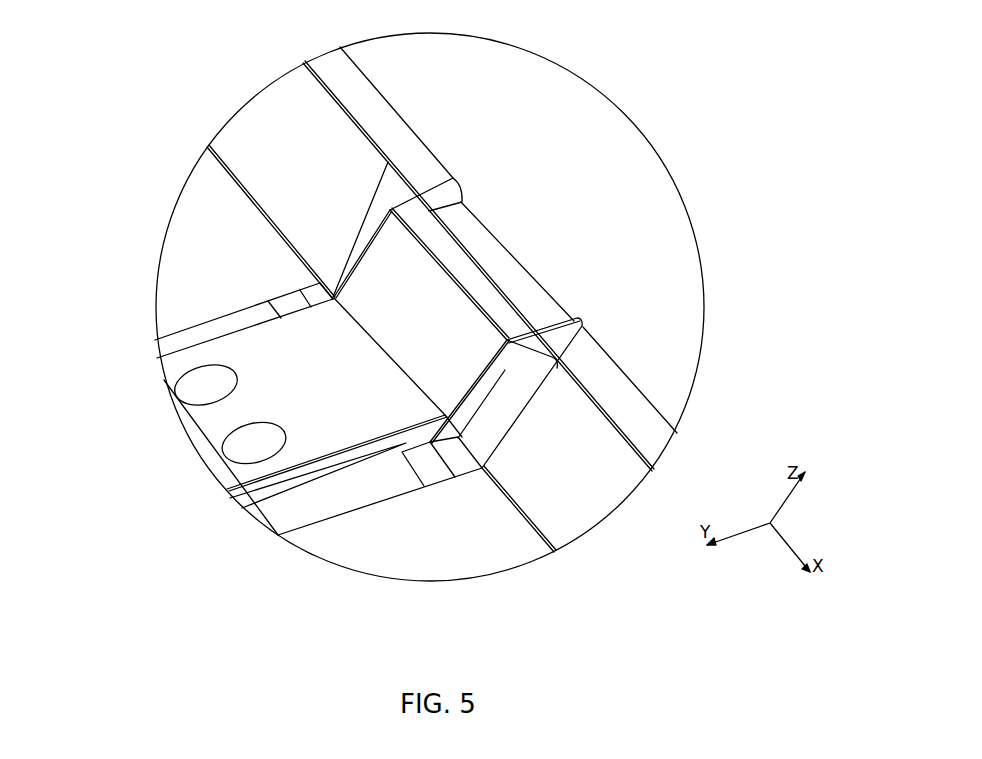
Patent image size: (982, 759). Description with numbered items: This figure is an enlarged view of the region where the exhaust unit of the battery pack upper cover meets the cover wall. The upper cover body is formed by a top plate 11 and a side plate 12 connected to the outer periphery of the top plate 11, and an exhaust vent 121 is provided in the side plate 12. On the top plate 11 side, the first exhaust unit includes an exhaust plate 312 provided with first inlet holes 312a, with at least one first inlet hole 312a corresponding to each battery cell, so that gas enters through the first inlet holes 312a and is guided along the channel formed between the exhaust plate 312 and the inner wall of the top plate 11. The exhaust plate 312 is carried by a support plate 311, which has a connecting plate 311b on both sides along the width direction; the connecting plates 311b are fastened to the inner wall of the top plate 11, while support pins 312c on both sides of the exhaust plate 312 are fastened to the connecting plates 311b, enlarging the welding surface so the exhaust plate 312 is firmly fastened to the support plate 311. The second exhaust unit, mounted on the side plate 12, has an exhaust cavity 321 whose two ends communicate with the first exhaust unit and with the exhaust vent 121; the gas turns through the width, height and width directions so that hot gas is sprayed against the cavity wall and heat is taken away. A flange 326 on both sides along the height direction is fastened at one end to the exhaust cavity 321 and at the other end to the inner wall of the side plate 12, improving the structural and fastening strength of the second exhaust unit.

The top plate 11 is at (206, 254).
The side plate 12 is at (272, 125).
The exhaust vent 121 is at (473, 233).
The exhaust cavity 321 is at (452, 313).
The flange 326 is at (530, 368).
The support plate 311 is at (290, 507).
The connecting plate 311b is at (367, 487).
The exhaust plate 312 is at (207, 428).
The first inlet hole 312a is at (193, 388).
The support pin 312c is at (433, 467).